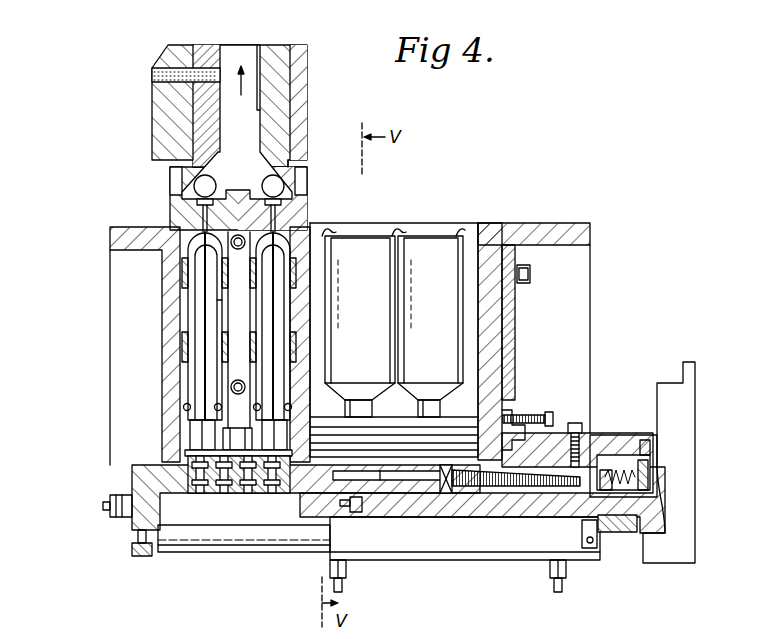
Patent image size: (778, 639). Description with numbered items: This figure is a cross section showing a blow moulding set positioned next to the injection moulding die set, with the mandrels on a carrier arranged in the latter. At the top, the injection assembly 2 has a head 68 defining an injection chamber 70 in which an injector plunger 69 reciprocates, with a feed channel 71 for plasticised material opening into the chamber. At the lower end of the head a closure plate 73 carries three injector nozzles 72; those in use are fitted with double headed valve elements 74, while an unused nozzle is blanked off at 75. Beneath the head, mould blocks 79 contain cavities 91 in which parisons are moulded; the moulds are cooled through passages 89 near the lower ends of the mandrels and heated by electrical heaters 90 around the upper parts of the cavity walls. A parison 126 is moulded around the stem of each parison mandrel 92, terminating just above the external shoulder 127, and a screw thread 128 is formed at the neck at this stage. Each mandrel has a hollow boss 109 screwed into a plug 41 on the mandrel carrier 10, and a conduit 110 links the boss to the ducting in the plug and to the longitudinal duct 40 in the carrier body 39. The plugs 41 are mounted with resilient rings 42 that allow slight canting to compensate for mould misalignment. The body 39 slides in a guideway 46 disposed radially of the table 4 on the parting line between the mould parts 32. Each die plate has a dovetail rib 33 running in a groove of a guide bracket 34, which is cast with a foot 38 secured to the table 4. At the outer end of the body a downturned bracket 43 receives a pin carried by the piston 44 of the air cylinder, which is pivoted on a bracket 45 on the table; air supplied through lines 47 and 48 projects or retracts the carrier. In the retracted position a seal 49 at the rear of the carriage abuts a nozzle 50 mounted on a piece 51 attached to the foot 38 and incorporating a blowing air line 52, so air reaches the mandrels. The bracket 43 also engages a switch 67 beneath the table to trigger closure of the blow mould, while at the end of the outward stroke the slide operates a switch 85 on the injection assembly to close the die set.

The injection assembly 2 is at (309, 72).
The table 4 is at (500, 500).
The mandrel carrier 10 is at (152, 478).
The mould parts 32 is at (470, 228).
The rib 33 is at (490, 307).
The guide bracket 34 is at (510, 358).
The foot 38 is at (545, 428).
The body 39 is at (393, 483).
The duct 40 is at (427, 483).
The plugs 41 is at (234, 488).
The resilient rings 42 is at (198, 470).
The bracket 43 is at (140, 558).
The piston 44 is at (226, 553).
The bracket 45 is at (612, 538).
The guideway 46 is at (532, 470).
The air line 47 is at (560, 590).
The air line 48 is at (347, 585).
The seal 49 is at (448, 494).
The nozzle 50 is at (584, 432).
The piece 51 is at (631, 436).
The blowing air line 52 is at (650, 445).
The switch 67 is at (343, 505).
The head 68 is at (300, 166).
The injector plunger 69 is at (232, 58).
The injection chamber 70 is at (246, 122).
The feed channel 71 is at (160, 78).
The injector nozzles 72 is at (224, 200).
The closure plate 73 is at (297, 212).
The double headed valve elements 74 is at (185, 211).
The blanked-off nozzle 75 is at (238, 250).
The mould blocks 79 is at (220, 370).
The switch 85 is at (103, 508).
The passages 89 is at (262, 404).
The electrical heaters 90 is at (216, 292).
The cavities 91 is at (218, 308).
The parison mandrel 92 is at (277, 296).
The hollow boss 109 is at (235, 438).
The conduit 110 is at (200, 452).
The parison 126 is at (188, 288).
The external shoulder 127 is at (210, 423).
The screw thread 128 is at (230, 383).